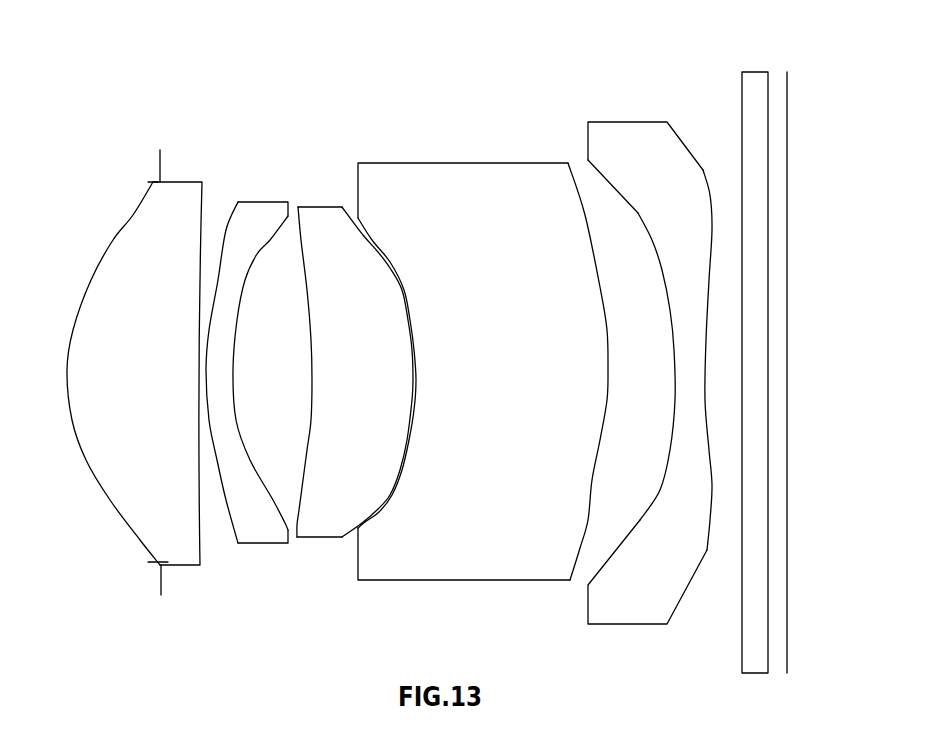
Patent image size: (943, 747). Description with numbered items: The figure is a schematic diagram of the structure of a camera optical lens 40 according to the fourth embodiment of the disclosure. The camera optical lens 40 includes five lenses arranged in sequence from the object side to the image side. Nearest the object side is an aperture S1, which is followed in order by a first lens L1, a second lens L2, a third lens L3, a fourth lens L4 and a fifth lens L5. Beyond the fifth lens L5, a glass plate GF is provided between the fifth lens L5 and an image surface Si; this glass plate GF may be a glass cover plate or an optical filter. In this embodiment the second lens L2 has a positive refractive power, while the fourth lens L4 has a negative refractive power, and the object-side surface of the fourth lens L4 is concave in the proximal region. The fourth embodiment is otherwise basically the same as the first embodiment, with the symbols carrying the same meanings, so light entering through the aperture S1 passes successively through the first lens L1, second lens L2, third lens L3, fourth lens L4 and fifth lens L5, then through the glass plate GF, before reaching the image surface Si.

The camera optical lens 40 is at (460, 42).
The aperture S1 is at (160, 362).
The first lens L1 is at (134, 362).
The second lens L2 is at (247, 362).
The third lens L3 is at (355, 361).
The fourth lens L4 is at (483, 362).
The fifth lens L5 is at (650, 362).
The glass plate GF is at (753, 362).
The image surface Si is at (785, 362).